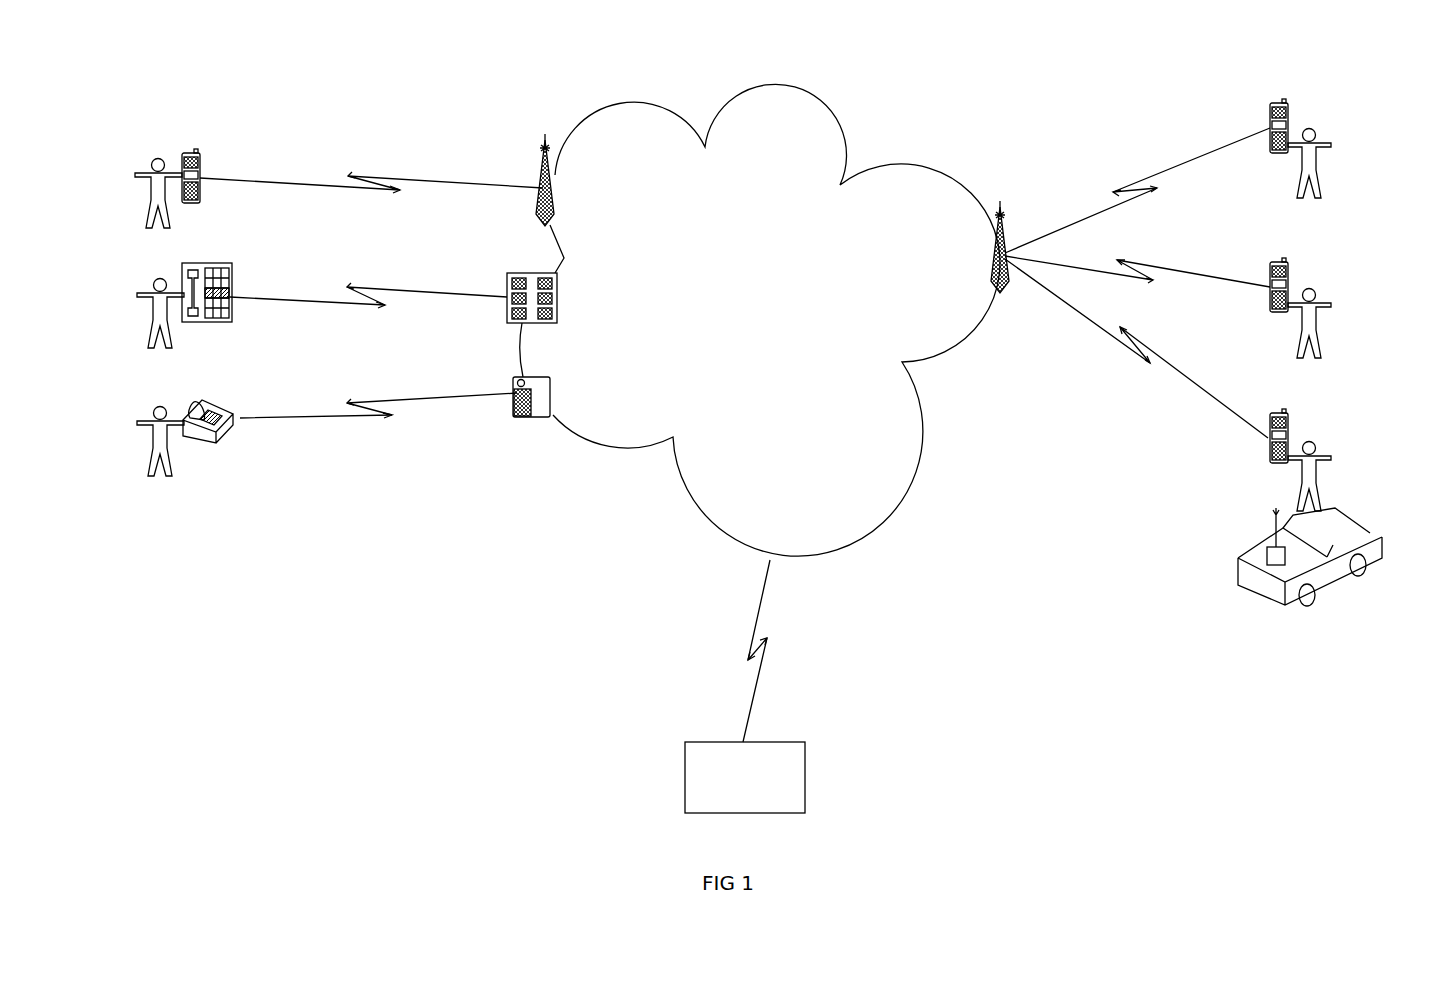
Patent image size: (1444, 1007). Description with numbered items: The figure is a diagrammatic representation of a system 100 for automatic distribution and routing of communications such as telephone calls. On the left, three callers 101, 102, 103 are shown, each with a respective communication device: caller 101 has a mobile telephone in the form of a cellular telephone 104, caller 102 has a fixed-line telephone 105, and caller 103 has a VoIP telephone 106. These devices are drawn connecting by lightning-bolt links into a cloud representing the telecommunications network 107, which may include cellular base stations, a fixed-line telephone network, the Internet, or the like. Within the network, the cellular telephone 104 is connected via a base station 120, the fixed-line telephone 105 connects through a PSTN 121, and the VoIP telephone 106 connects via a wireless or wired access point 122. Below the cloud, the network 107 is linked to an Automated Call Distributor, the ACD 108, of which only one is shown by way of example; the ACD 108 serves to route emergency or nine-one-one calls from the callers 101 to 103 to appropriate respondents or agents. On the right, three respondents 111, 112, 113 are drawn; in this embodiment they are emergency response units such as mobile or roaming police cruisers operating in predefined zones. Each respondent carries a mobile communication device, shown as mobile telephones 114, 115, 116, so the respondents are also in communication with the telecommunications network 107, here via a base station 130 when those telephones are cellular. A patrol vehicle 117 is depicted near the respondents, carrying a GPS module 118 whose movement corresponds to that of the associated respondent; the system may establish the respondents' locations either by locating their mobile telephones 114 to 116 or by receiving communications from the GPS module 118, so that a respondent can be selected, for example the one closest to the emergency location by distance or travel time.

The system 100 is at (392, 86).
The caller 101 is at (156, 157).
The caller 102 is at (157, 355).
The caller 103 is at (160, 475).
The cellular telephone 104 is at (201, 167).
The fixed-line telephone 105 is at (232, 275).
The VoIP telephone 106 is at (233, 403).
The telecommunications network 107 is at (677, 482).
The Automated Call Distributor (ACD) 108 is at (708, 742).
The respondent 111 is at (1332, 160).
The respondent 112 is at (1332, 320).
The respondent 113 is at (1332, 473).
The mobile telephone 114 is at (1289, 115).
The mobile telephone 115 is at (1289, 287).
The mobile telephone 116 is at (1289, 438).
The patrol vehicle 117 is at (1238, 575).
The GPS module 118 is at (1273, 537).
The base station 120 is at (550, 178).
The PSTN 121 is at (557, 300).
The access point 122 is at (550, 398).
The base station 130 is at (983, 272).